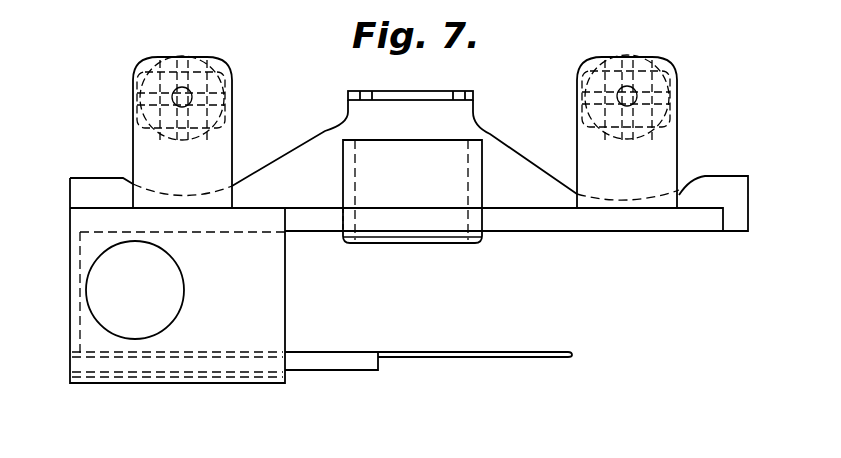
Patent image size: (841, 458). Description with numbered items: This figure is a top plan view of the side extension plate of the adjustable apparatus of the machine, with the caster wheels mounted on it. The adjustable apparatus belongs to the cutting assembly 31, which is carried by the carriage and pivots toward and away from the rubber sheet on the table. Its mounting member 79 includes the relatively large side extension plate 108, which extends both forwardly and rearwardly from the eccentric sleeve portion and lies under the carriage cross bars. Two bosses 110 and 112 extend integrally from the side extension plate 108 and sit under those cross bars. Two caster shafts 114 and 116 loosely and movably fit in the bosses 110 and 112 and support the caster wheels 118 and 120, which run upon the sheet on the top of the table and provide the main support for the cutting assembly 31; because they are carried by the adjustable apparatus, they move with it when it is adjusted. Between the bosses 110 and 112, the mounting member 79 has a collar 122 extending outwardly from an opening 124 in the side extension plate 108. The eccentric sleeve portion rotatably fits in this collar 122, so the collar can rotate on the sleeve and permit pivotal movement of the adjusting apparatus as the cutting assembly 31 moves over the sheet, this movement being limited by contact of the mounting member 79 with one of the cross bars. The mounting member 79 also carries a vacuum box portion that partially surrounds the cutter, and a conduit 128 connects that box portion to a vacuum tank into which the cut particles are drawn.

The cutting assembly 31 is at (143, 392).
The mounting member 79 is at (80, 330).
The side extension plate 108 is at (562, 220).
The boss 110 is at (218, 167).
The boss 112 is at (590, 158).
The caster shaft 114 is at (180, 97).
The caster shaft 116 is at (632, 93).
The caster wheel 118 is at (184, 57).
The caster wheel 120 is at (630, 55).
The collar 122 is at (483, 183).
The opening 124 is at (343, 219).
The conduit 128 is at (183, 276).